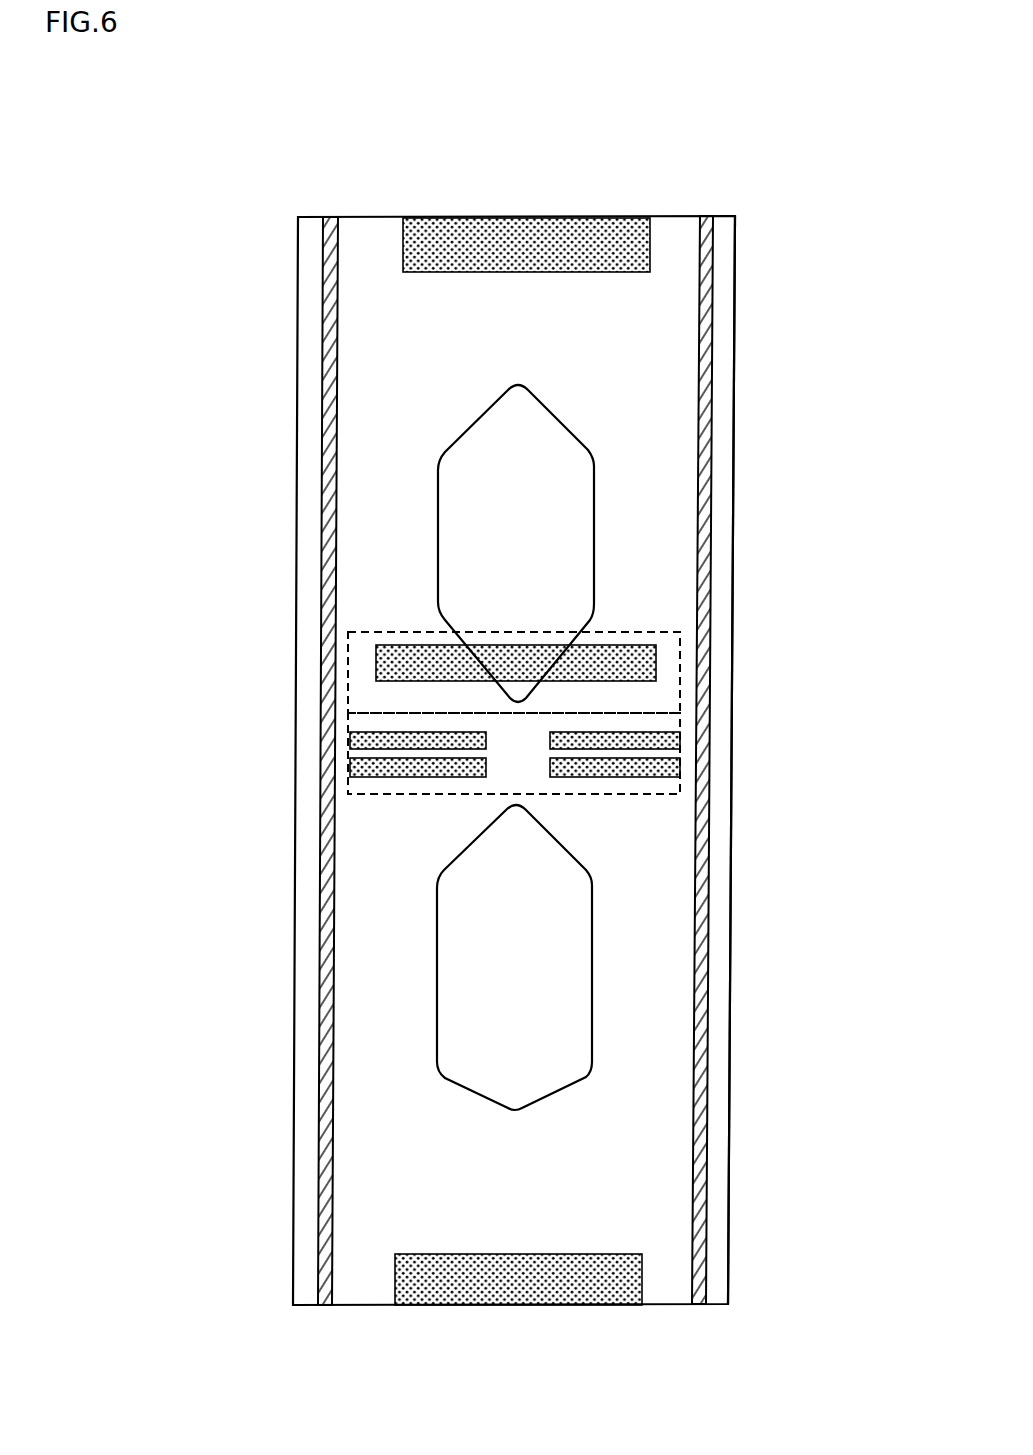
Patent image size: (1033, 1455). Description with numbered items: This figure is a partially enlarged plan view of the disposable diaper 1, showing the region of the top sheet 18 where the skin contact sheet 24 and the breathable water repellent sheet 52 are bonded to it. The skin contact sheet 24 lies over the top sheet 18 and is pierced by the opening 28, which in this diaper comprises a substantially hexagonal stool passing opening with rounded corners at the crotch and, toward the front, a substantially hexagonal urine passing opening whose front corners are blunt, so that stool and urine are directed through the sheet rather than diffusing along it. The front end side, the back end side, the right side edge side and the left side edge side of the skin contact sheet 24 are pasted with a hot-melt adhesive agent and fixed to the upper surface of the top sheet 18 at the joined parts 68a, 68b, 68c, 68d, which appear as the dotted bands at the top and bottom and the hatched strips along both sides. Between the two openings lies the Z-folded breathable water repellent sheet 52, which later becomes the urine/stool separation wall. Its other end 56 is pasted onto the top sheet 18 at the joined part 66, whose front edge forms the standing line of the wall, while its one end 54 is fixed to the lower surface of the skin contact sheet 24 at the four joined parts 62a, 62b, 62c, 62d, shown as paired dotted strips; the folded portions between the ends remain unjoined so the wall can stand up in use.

The disposable diaper 1 is at (770, 45).
The top sheet 18 is at (490, 428).
The skin contact sheet 24 is at (722, 359).
The opening 28 is at (470, 510).
The breathable water repellent sheet 52 is at (645, 697).
The one end of the breathable water repellent sheet 54 is at (625, 803).
The other end of the breathable water repellent sheet 56 is at (645, 597).
The joined part 62a is at (630, 778).
The joined part 62b is at (630, 727).
The joined part 62c is at (400, 778).
The joined part 62d is at (398, 733).
The joined part 66 is at (648, 663).
The joined part 68a is at (545, 1285).
The joined part 68b is at (565, 243).
The joined part 68c is at (708, 292).
The joined part 68d is at (324, 1150).